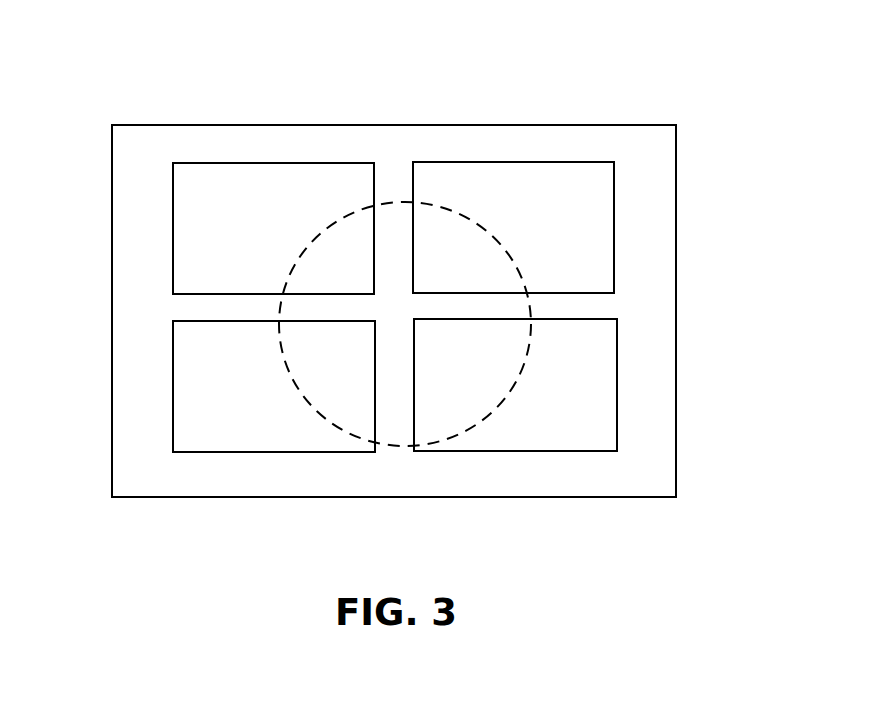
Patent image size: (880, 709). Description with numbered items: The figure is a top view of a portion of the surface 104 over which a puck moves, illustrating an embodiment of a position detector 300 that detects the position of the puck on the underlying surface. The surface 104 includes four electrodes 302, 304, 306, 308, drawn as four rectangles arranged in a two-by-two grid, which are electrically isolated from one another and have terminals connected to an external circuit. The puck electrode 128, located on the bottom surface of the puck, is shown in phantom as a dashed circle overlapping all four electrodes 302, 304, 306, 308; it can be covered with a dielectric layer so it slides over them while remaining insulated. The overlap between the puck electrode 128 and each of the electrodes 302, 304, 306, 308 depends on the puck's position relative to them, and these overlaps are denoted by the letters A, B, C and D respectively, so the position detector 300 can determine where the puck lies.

The position detector 300 is at (490, 97).
The surface 104 is at (135, 458).
The puck electrode 128 is at (354, 208).
The electrode 302 is at (260, 216).
The electrode 304 is at (575, 213).
The electrode 306 is at (256, 412).
The electrode 308 is at (593, 429).